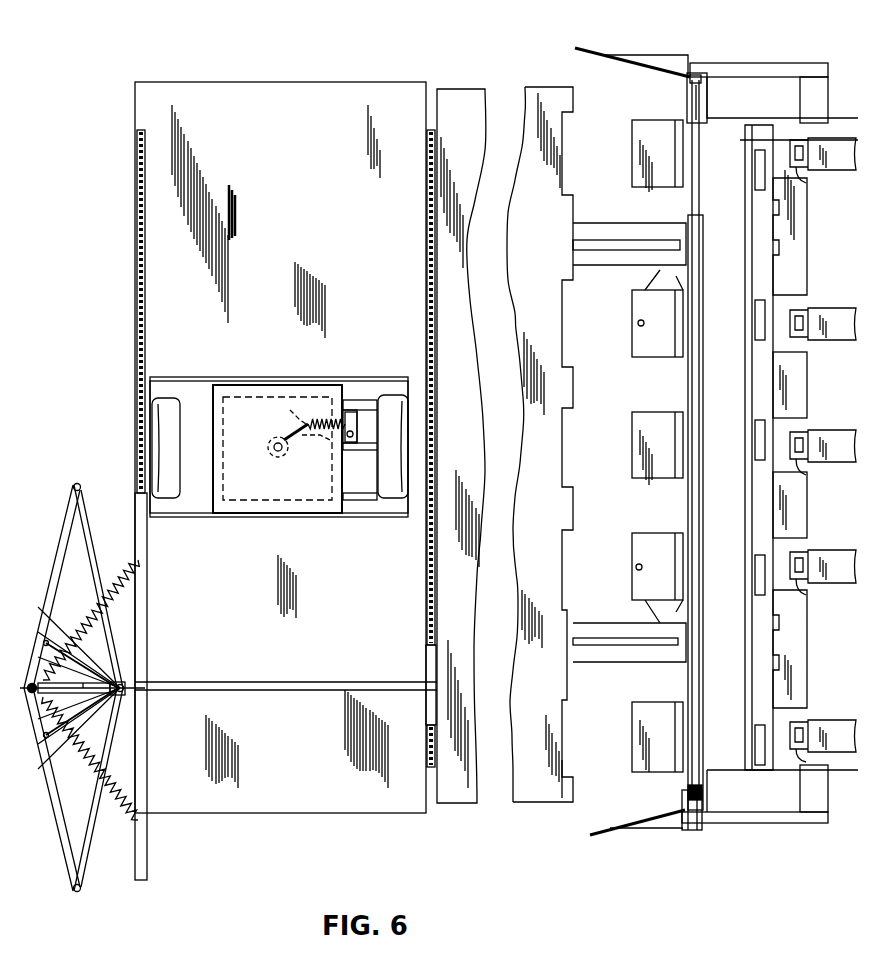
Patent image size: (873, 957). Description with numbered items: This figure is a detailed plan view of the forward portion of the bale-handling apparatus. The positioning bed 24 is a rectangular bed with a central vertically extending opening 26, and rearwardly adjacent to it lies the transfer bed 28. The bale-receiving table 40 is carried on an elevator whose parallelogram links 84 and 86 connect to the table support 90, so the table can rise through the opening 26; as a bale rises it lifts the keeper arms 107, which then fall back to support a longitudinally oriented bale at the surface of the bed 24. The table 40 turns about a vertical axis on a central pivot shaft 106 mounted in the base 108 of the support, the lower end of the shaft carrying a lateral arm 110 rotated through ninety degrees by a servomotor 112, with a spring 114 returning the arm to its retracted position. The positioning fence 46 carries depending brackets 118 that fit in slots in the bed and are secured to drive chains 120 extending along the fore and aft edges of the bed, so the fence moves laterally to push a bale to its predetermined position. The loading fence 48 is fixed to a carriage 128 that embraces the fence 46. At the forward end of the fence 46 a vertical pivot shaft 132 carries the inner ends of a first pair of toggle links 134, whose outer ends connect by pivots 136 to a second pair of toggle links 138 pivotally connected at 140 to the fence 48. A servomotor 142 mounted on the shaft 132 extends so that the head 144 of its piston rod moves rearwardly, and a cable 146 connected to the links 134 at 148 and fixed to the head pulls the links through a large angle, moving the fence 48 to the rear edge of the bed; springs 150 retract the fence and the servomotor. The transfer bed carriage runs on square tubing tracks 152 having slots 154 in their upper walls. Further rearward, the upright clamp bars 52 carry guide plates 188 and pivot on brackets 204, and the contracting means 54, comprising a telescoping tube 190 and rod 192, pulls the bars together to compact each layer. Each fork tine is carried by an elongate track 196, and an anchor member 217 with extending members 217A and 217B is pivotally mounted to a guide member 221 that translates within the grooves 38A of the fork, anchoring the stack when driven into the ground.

The positioning bed 24 is at (345, 236).
The central vertically extending opening 26 is at (195, 378).
The transfer bed 28 is at (458, 89).
The grooves 38A is at (806, 183).
The bale-receiving table 40 is at (205, 517).
The positioning fence 46 is at (300, 689).
The loading fence 48 is at (148, 858).
The upright clamp bars 52 is at (705, 78).
The contracting means 54 is at (706, 421).
The parallelogram links 84 is at (365, 400).
The parallelogram link 86 is at (357, 445).
The table support 90 is at (282, 514).
The central pivot shaft 106 is at (271, 455).
The keeper arms 107 is at (152, 428).
The base 108 is at (280, 458).
The lateral arm 110 is at (288, 412).
The servomotor 112 is at (330, 438).
The spring 114 is at (318, 418).
The depending brackets 118 is at (427, 652).
The drive chains 120 is at (145, 330).
The carriage 128 is at (60, 690).
The vertical pivot shaft 132 is at (98, 670).
The first pair of toggle links 134 is at (62, 525).
The pivots 136 is at (80, 485).
The second pair of toggle links 138 is at (92, 510).
The pivot 140 is at (125, 690).
The servomotor 142 is at (85, 692).
The head 144 is at (115, 680).
The cable 146 is at (95, 660).
The cable connection 148 is at (47, 640).
The springs 150 is at (128, 592).
The tracks 152 is at (580, 225).
The slots 154 is at (636, 240).
The guide plates 188 is at (595, 48).
The telescoping tube 190 is at (703, 360).
The rod 192 is at (688, 800).
The elongate track 196 is at (822, 170).
The brackets 204 is at (707, 100).
The anchor member 217 is at (765, 702).
The extending member 217A is at (805, 242).
The extending member 217B is at (805, 357).
The guide member 221 is at (760, 145).